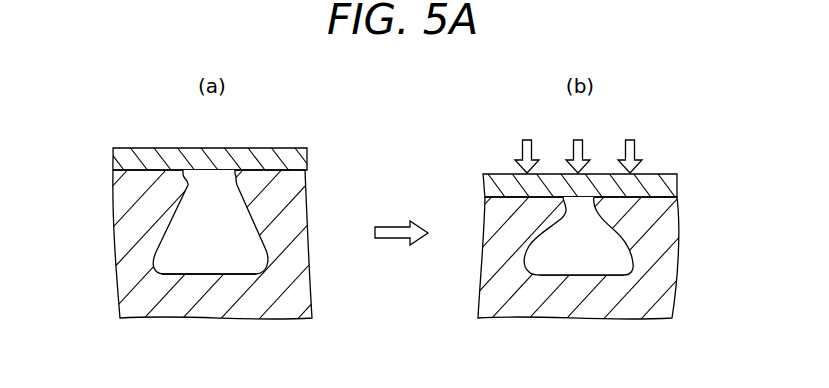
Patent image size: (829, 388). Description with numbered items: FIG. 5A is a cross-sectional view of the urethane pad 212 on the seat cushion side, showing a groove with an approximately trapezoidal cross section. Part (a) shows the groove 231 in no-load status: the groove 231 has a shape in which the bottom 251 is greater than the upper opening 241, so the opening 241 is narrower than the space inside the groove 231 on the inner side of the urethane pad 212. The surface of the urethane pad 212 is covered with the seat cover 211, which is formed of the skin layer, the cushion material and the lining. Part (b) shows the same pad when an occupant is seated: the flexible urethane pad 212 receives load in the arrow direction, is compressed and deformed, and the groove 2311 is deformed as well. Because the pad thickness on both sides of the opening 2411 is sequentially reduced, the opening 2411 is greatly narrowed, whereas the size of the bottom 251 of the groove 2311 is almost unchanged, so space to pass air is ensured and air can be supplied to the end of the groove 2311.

The seat cover 211 is at (115, 158).
The urethane pad 212 is at (122, 288).
The groove 231 is at (183, 232).
The opening 241 is at (213, 183).
The bottom 251 is at (207, 274).
The groove 2311 is at (603, 245).
The opening 2411 is at (585, 207).